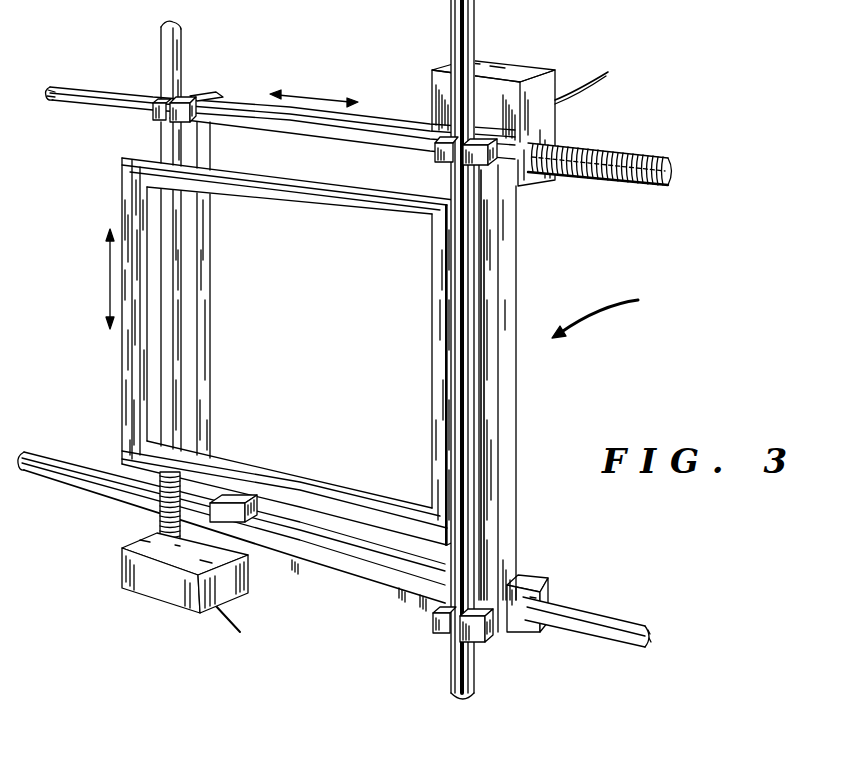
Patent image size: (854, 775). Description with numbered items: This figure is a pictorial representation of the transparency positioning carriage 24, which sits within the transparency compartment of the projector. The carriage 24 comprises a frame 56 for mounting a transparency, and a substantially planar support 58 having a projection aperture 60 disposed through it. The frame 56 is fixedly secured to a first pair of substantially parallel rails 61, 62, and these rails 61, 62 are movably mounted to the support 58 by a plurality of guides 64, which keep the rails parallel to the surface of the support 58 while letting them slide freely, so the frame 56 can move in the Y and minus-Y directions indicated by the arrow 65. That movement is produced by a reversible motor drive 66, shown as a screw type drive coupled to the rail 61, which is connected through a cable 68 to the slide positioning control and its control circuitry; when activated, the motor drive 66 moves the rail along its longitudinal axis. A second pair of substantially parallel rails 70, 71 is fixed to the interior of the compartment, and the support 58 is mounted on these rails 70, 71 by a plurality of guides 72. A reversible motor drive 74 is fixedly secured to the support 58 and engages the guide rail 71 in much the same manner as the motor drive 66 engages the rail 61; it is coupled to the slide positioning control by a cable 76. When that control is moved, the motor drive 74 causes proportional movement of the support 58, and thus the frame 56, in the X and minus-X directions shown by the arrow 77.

The transparency positioning carriage 24 is at (612, 315).
The frame 56 is at (437, 377).
The support 58 is at (513, 262).
The projection aperture 60 is at (390, 580).
The rail 61 is at (160, 45).
The rail 62 is at (452, 16).
The guides 64 is at (153, 115).
The arrow 65 is at (90, 274).
The motor drive 66 is at (167, 597).
The cable 68 is at (238, 617).
The rail 70 is at (580, 608).
The rail 71 is at (623, 152).
The guides 72 is at (205, 94).
The motor drive 74 is at (500, 75).
The cable 76 is at (585, 77).
The arrow 77 is at (313, 82).